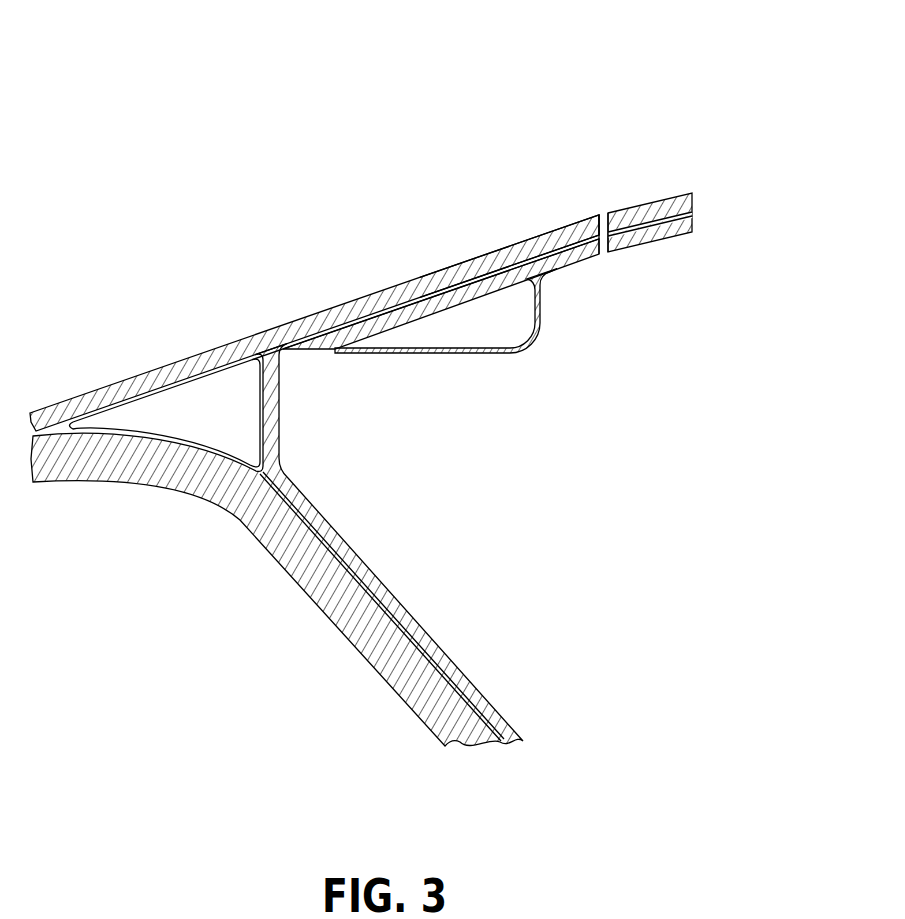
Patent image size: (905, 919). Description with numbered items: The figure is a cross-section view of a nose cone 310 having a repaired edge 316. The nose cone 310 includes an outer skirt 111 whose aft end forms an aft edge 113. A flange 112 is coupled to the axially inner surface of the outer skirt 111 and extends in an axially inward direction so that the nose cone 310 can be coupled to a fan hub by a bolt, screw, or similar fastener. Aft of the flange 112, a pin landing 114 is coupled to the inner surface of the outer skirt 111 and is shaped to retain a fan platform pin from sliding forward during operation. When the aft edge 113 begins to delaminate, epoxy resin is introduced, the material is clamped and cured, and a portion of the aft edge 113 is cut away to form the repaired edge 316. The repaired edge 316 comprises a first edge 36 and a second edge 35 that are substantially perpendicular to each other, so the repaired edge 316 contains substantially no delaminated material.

The nose cone 310 is at (156, 104).
The outer skirt 111 is at (322, 316).
The flange 112 is at (410, 622).
The aft edge 113 is at (677, 208).
The pin landing 114 is at (413, 335).
The first edge 36 is at (578, 221).
The second edge 35 is at (585, 260).
The repaired edge 316 is at (602, 238).